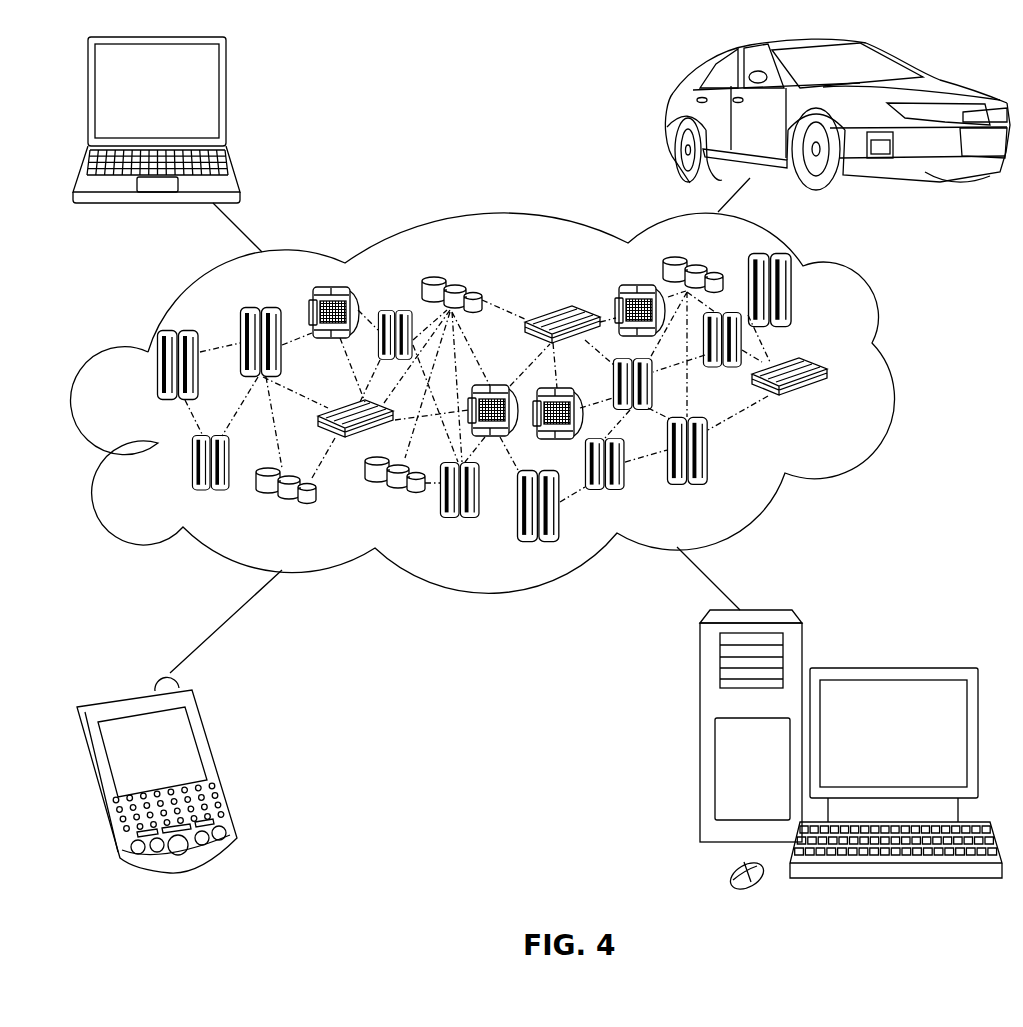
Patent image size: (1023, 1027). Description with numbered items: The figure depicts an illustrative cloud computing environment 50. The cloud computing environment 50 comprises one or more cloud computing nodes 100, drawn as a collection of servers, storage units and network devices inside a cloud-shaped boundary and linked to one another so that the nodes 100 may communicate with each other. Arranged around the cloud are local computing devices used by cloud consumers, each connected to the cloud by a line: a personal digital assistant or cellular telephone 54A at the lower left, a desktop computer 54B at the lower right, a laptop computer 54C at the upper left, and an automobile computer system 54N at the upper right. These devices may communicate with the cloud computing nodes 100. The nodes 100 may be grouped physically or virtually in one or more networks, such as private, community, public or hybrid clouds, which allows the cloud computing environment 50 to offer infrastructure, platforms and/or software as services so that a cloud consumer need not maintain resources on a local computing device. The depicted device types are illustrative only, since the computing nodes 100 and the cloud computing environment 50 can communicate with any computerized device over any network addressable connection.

The cloud computing environment 50 is at (897, 373).
The cloud computing nodes 100 is at (834, 407).
The personal digital assistant or cellular telephone 54A is at (217, 765).
The desktop computer 54B is at (890, 668).
The laptop computer 54C is at (228, 101).
The automobile computer system 54N is at (670, 117).